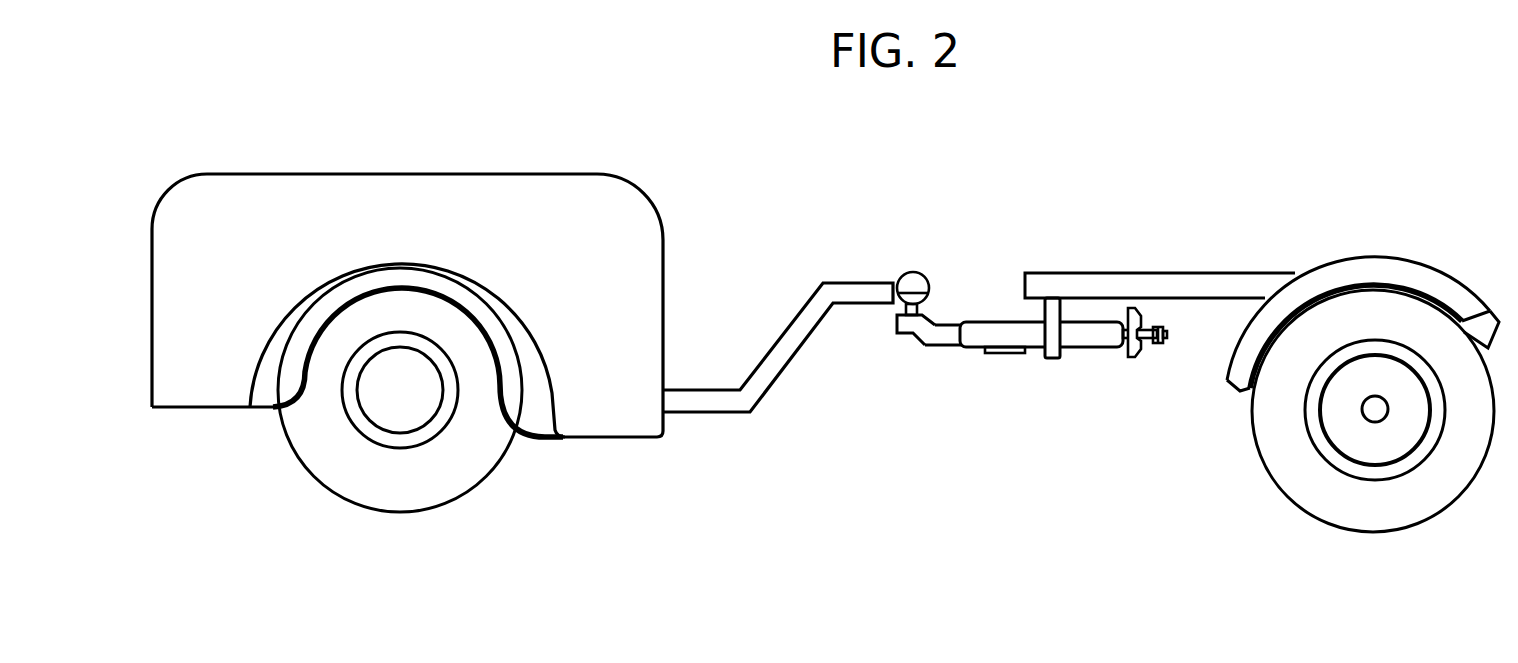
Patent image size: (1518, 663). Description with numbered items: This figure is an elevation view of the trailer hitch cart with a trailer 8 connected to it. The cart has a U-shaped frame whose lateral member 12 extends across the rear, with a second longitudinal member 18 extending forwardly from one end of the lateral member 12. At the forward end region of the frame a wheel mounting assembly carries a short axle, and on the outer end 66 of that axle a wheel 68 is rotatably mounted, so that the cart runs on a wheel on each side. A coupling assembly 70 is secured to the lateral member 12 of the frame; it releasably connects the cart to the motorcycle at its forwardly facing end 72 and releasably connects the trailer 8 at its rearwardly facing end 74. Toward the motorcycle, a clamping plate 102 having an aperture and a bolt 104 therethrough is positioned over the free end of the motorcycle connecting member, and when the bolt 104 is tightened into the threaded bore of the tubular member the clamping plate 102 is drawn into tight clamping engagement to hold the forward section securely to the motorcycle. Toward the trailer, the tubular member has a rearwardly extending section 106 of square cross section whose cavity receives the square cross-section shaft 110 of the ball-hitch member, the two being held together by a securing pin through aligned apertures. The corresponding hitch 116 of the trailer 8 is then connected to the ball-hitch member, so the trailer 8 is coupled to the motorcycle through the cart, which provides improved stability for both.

The trailer 8 is at (537, 170).
The lateral member 12 is at (1248, 374).
The second longitudinal member 18 is at (1175, 273).
The outer end 66 is at (1367, 412).
The wheel 68 is at (1292, 499).
The coupling assembly 70 is at (1073, 348).
The forwardly facing end 72 is at (1112, 348).
The rearwardly facing end 74 is at (968, 349).
The clamping plate 102 is at (1138, 358).
The bolt 104 is at (1167, 335).
The rearwardly extending section 106 is at (977, 352).
The shaft 110 is at (930, 336).
The hitch 116 is at (915, 271).